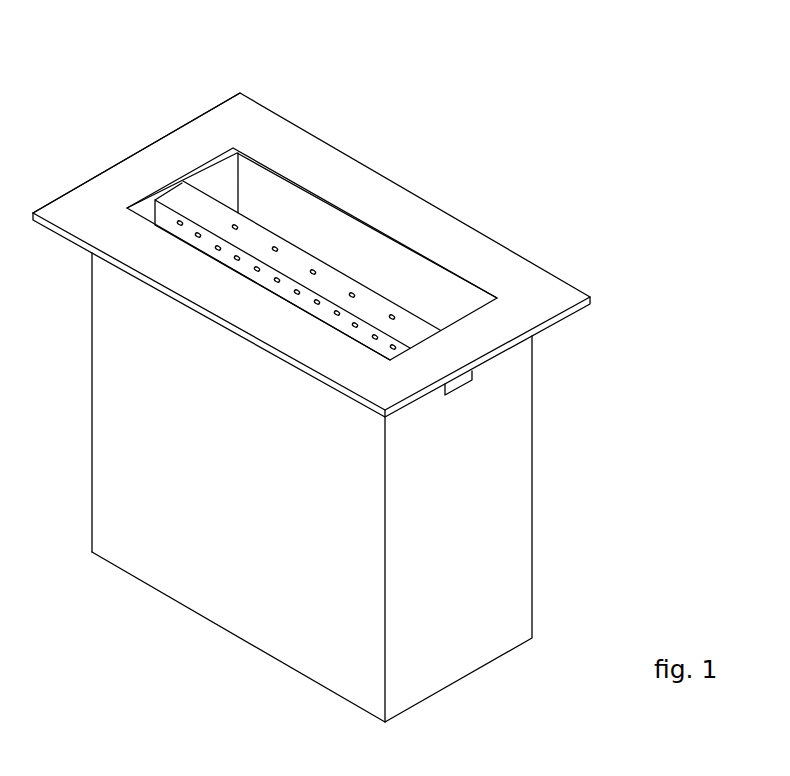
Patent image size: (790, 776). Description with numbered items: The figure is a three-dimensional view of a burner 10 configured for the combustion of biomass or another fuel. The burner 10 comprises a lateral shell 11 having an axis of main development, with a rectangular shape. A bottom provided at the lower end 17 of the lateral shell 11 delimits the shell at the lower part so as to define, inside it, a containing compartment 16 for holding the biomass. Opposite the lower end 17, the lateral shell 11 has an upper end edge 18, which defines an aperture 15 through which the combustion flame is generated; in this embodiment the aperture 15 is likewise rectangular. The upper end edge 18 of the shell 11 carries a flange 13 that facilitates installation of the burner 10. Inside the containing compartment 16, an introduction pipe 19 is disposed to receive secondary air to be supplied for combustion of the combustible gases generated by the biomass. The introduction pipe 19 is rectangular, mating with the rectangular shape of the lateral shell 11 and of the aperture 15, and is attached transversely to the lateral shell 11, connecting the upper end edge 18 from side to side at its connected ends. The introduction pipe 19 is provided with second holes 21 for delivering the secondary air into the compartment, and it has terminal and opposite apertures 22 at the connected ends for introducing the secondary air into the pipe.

The burner 10 is at (311, 367).
The lateral shell 11 is at (284, 487).
The flange 13 is at (311, 240).
The aperture 15 is at (336, 212).
The containing compartment 16 is at (297, 246).
The lower end 17 is at (89, 551).
The upper end edge 18 is at (104, 170).
The introduction pipe 19 is at (421, 326).
The second holes 21 is at (195, 205).
The apertures 22 is at (458, 386).